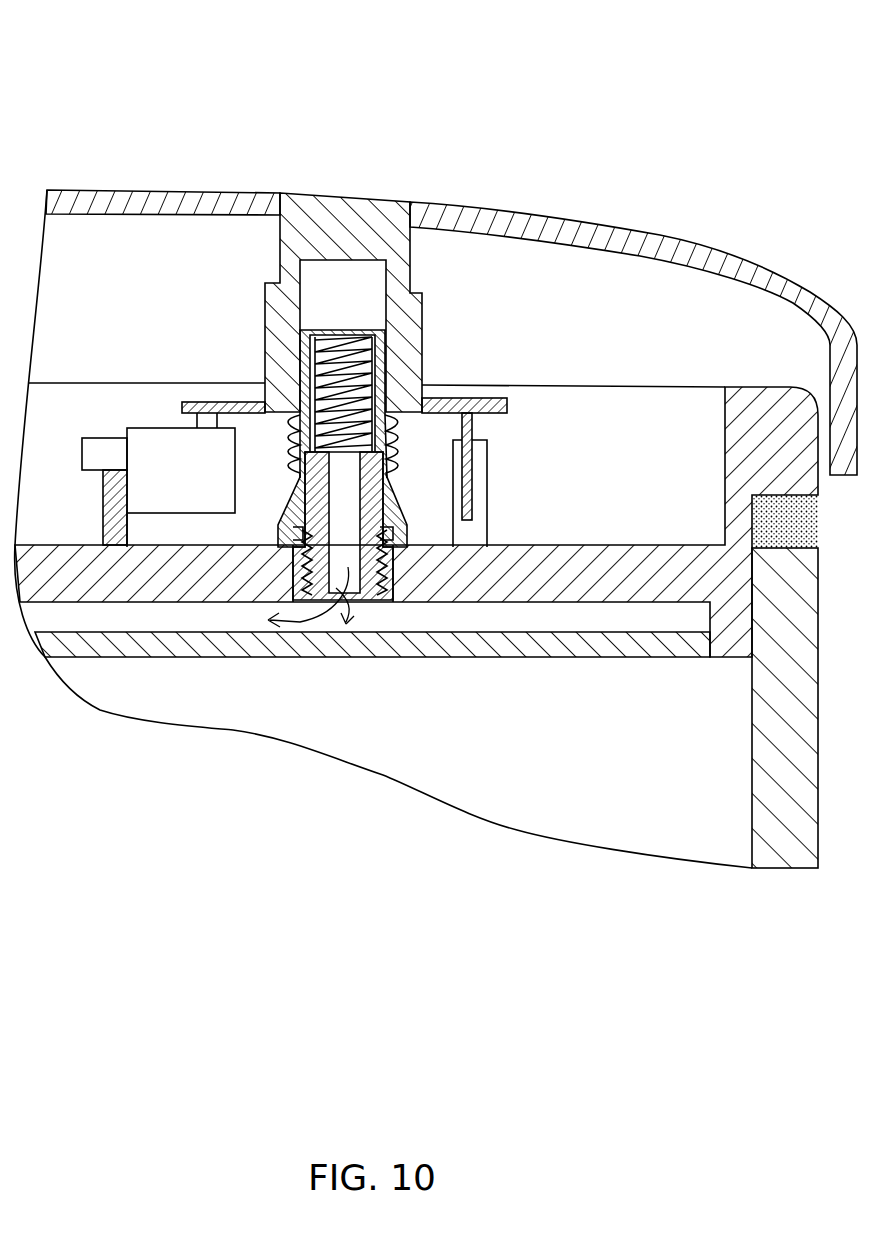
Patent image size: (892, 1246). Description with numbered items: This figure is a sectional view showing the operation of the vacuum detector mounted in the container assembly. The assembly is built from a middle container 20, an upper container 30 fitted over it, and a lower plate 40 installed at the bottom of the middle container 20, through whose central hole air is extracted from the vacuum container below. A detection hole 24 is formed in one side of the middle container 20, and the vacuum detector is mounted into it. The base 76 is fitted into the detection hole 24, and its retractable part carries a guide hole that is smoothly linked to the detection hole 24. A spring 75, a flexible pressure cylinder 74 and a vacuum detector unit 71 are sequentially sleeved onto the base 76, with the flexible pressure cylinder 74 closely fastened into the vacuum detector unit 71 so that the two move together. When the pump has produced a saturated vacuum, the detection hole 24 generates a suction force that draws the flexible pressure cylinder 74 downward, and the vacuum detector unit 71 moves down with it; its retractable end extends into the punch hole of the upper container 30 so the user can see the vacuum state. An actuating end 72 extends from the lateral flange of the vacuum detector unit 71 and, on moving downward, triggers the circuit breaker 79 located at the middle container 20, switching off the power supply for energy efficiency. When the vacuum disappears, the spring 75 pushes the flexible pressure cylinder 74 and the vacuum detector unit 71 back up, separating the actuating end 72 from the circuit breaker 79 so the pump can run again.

The middle container 20 is at (550, 580).
The detection hole 24 is at (367, 598).
The upper container 30 is at (456, 216).
The lower plate 40 is at (668, 636).
The vacuum detector unit 71 is at (313, 227).
The actuating end 72 is at (200, 412).
The flexible pressure cylinder 74 is at (385, 364).
The spring 75 is at (345, 425).
The base 76 is at (420, 392).
The circuit breaker 79 is at (147, 443).